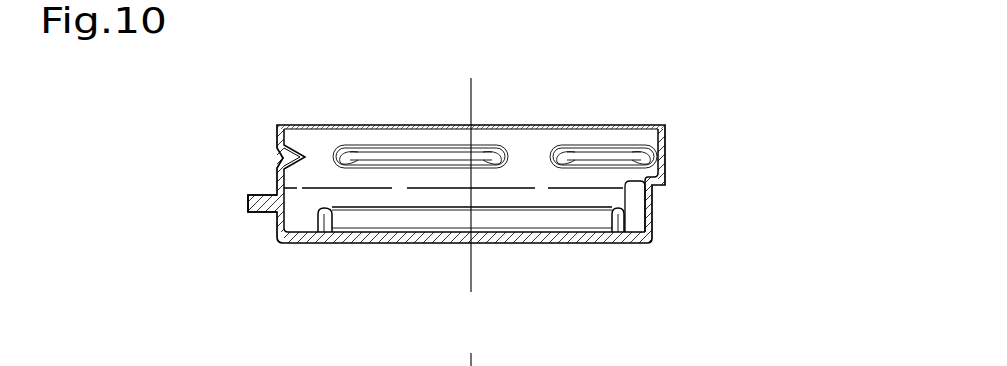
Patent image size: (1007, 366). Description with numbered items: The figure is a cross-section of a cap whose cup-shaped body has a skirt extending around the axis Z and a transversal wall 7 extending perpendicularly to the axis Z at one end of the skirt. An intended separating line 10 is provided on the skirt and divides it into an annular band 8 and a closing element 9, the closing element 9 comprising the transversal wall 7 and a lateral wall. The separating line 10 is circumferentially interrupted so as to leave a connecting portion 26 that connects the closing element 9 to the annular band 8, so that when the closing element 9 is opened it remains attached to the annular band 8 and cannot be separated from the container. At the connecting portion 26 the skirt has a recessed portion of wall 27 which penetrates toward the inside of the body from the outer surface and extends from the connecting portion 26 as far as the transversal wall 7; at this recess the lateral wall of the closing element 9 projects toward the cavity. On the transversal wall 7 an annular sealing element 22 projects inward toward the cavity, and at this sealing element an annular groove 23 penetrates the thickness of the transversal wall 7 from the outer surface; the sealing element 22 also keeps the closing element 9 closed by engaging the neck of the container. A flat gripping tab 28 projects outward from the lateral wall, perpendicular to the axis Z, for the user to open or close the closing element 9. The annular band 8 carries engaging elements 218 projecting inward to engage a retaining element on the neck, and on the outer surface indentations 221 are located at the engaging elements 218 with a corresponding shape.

The intended separating line 10 is at (520, 185).
The axis Z is at (471, 97).
The engaging elements 218 is at (372, 152).
The annular band 8 is at (665, 148).
The indentations 221 is at (283, 152).
The gripping tab 28 is at (248, 202).
The closing element 9 is at (300, 213).
The annular sealing element 22 is at (333, 217).
The transversal wall 7 is at (515, 243).
The annular groove 23 is at (620, 250).
The connecting portion 26 is at (670, 197).
The recessed portion of wall 27 is at (650, 213).